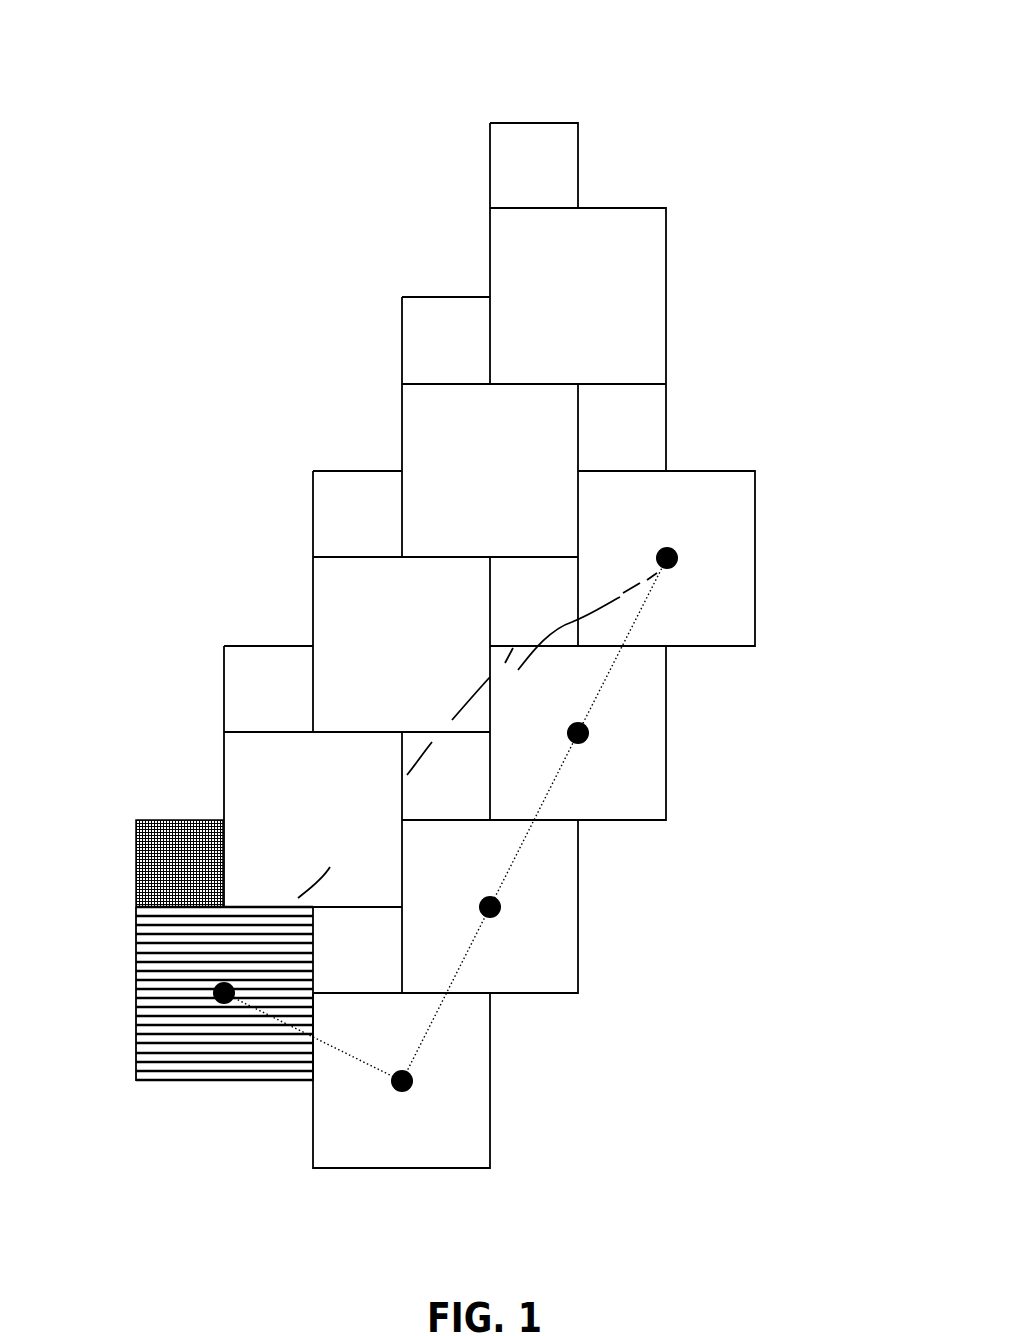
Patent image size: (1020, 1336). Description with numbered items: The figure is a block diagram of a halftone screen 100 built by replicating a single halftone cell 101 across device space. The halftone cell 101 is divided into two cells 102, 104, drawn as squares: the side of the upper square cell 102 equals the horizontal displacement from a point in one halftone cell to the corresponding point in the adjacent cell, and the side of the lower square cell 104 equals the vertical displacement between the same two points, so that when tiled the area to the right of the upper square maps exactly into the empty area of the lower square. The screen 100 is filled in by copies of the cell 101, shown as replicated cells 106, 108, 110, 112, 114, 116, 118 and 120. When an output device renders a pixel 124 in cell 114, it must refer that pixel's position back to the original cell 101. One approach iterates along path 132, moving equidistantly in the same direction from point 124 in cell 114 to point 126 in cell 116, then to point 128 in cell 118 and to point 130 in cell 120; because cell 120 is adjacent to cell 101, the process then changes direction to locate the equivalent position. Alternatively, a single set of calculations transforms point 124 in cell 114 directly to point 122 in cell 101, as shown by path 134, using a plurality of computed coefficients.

The halftone screen 100 is at (660, 56).
The halftone cell 101 is at (136, 909).
The upper square cell 102 is at (136, 868).
The lower square cell 104 is at (136, 1032).
The replicated cell 106 is at (224, 733).
The replicated cell 108 is at (313, 590).
The image frame 110 is at (402, 348).
The replicated cell 112 is at (666, 283).
The replicated cell 114 is at (755, 578).
The replicated cell 116 is at (666, 759).
The replicated cell 118 is at (578, 926).
The replicated cell 120 is at (490, 1125).
The point in cell 101 122 is at (223, 983).
The pixel 124 is at (656, 557).
The point in cell 116 126 is at (567, 733).
The point in cell 118 128 is at (489, 896).
The point in cell 120 130 is at (402, 1092).
The path 132 is at (532, 855).
The path 134 is at (358, 838).